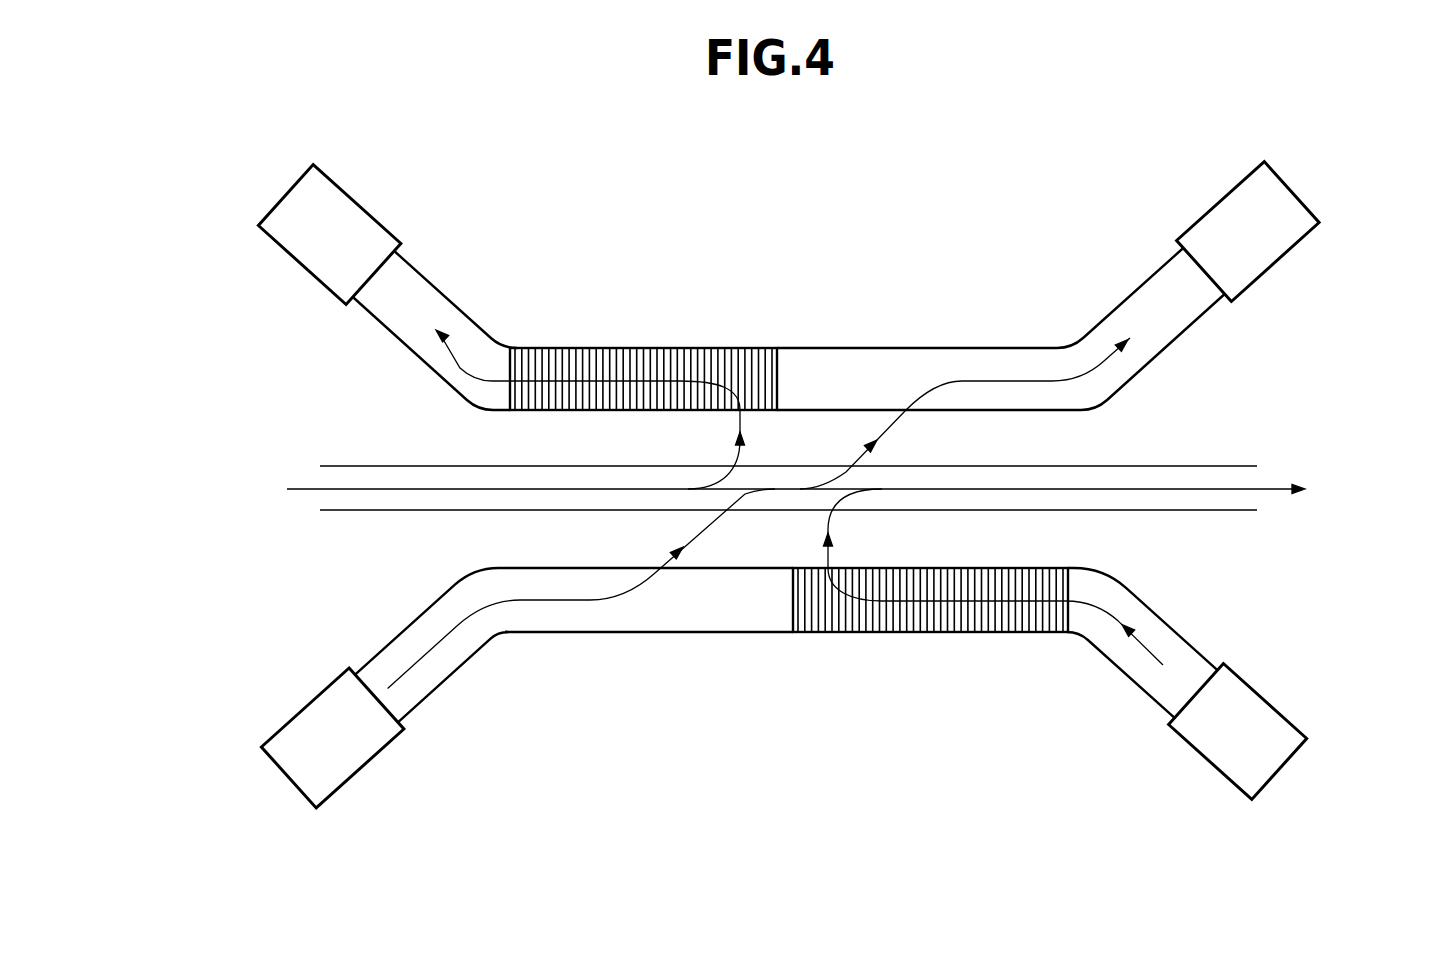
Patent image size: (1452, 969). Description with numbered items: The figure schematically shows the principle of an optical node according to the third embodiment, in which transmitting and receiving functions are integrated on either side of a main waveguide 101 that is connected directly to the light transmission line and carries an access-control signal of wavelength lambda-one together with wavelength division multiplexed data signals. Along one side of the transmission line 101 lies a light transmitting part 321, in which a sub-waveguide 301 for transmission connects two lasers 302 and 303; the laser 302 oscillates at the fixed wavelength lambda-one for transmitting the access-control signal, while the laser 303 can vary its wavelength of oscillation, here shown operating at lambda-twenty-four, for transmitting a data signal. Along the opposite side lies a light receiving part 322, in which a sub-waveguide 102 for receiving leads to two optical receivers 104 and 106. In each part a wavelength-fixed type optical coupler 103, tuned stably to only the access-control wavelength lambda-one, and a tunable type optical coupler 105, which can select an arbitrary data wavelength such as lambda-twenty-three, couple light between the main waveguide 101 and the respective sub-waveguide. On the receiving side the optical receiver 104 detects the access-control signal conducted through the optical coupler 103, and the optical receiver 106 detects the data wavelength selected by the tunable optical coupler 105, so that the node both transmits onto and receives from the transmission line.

The main waveguide 101 is at (1192, 465).
The sub-waveguide 102 is at (1100, 322).
The wavelength-fixed type optical coupler 103 is at (1053, 335).
The optical receiver 104 is at (1213, 207).
The tunable type optical coupler 105 is at (780, 335).
The optical receiver 106 is at (365, 218).
The sub-waveguide 301 is at (1122, 678).
The laser 302 is at (373, 762).
The laser 303 is at (1205, 757).
The light transmitting part 321 is at (230, 535).
The light receiving part 322 is at (230, 150).